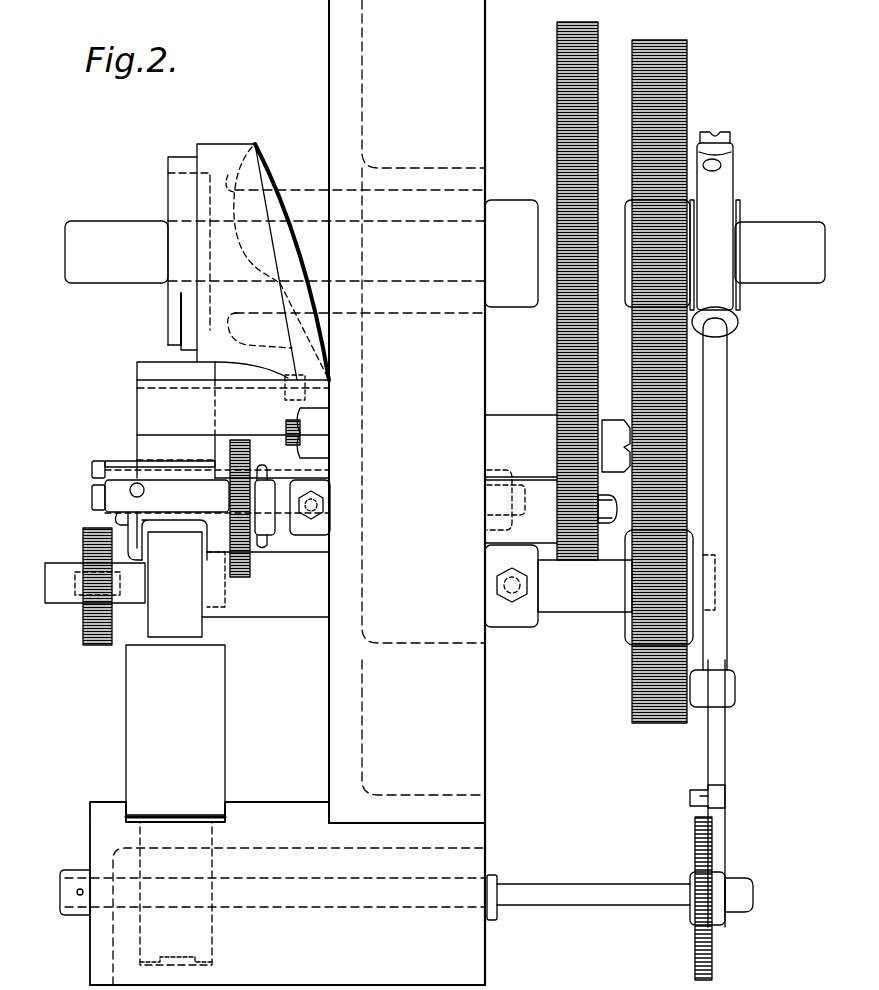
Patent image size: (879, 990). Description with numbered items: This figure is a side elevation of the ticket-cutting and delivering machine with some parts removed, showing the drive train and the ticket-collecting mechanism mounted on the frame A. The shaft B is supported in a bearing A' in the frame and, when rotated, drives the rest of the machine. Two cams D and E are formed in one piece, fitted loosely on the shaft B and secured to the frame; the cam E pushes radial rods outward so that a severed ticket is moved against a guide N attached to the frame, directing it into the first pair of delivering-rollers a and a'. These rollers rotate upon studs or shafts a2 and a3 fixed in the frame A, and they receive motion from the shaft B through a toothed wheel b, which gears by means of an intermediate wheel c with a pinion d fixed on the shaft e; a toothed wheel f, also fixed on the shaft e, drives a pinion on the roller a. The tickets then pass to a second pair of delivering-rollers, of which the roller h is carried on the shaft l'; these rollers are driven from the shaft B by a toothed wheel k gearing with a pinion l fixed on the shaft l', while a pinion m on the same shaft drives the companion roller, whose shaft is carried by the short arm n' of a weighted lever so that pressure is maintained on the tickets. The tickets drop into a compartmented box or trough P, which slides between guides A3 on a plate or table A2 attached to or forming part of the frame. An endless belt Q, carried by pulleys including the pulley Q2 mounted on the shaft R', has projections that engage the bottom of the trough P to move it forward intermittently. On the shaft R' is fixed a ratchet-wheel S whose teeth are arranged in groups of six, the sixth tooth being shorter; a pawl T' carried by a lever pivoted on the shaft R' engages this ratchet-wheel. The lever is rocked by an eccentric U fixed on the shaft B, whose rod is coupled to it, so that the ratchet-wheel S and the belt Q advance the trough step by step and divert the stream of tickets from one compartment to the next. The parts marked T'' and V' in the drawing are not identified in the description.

The frame A is at (326, 492).
The bearing A' is at (263, 262).
The plate or table A2 is at (272, 893).
The guides A3 is at (124, 806).
The shaft B is at (445, 253).
The cam D is at (295, 344).
The cam E is at (189, 253).
The guide N is at (233, 420).
The box or trough P is at (175, 733).
The endless belt Q is at (176, 950).
The pulley Q2 is at (213, 938).
The shaft R' is at (620, 898).
The ratchet-wheel S is at (695, 930).
The pawl T' is at (723, 793).
The clamp T'' is at (704, 783).
The eccentric U is at (724, 234).
The connecting rod V' is at (723, 512).
The delivering-roller a is at (217, 491).
The delivering-roller a' is at (160, 452).
The stud or shaft a2 is at (87, 497).
The stud or shaft a3 is at (87, 465).
The toothed wheel b is at (565, 291).
The intermediate wheel c is at (557, 446).
The pinion d is at (521, 506).
The shaft e is at (606, 511).
The toothed wheel f is at (280, 508).
The delivering-roller h is at (238, 584).
The toothed wheel k is at (663, 381).
The pinion l is at (659, 576).
The shaft l' is at (380, 586).
The pinion m is at (82, 583).
The short arm n' is at (159, 536).